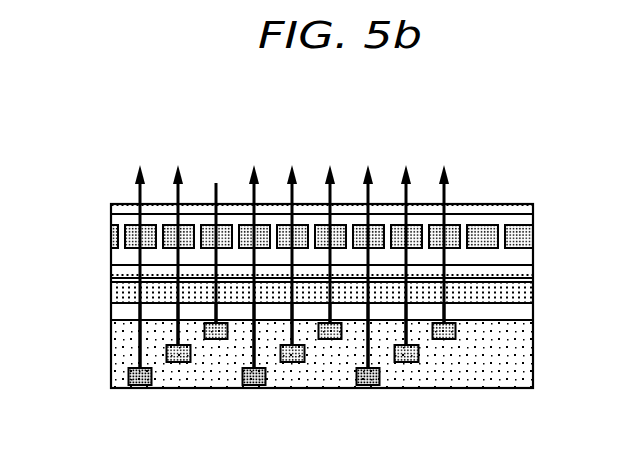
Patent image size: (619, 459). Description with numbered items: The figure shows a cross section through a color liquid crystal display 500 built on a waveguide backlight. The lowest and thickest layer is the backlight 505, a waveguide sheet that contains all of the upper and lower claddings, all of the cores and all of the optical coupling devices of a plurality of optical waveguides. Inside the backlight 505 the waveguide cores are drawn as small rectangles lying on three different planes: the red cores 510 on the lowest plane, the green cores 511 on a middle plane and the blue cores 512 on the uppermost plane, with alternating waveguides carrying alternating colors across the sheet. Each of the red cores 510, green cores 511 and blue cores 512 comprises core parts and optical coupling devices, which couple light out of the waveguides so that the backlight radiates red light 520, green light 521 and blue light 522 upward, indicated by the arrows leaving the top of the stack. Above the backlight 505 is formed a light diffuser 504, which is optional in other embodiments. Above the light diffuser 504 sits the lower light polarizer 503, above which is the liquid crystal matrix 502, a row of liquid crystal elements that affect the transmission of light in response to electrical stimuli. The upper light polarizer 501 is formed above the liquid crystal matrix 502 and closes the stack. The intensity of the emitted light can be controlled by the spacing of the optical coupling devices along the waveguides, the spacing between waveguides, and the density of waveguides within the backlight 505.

The liquid crystal display 500 is at (352, 90).
The upper light polarizer 501 is at (534, 210).
The liquid crystal matrix 502 is at (534, 238).
The lower light polarizer 503 is at (534, 268).
The light diffuser 504 is at (534, 296).
The backlight 505 is at (534, 313).
The red cores 510 is at (140, 390).
The green cores 511 is at (177, 363).
The blue cores 512 is at (216, 339).
The red light 520 is at (137, 200).
The green light 521 is at (181, 199).
The blue light 522 is at (332, 198).